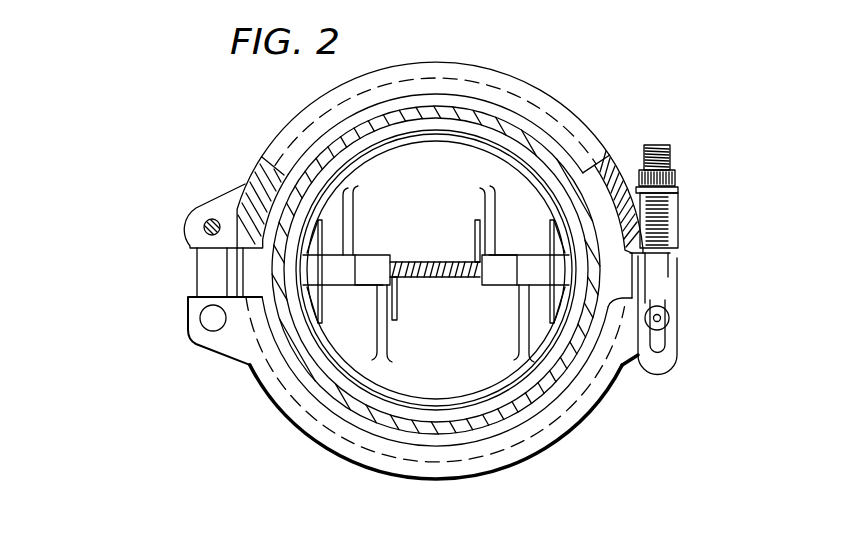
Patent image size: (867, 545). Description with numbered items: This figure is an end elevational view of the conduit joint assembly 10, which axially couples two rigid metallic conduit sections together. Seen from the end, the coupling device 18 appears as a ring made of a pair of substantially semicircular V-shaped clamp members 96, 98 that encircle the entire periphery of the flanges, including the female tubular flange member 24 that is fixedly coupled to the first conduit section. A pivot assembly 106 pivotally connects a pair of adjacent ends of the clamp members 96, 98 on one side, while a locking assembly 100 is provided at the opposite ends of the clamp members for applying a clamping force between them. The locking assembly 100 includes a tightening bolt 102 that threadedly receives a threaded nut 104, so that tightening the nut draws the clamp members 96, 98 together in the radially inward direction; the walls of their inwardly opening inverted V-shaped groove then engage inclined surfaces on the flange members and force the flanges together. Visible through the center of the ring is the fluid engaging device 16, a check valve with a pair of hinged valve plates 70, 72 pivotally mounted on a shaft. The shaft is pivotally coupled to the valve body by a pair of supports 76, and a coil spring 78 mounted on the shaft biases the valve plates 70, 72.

The conduit joint assembly 10 is at (432, 265).
The fluid engaging device 16 is at (383, 375).
The coupling device 18 is at (524, 78).
The female tubular flange member 24 is at (566, 152).
The valve plate 70 is at (447, 197).
The valve plate 72 is at (448, 388).
The support 76 is at (316, 252).
The coil spring 78 is at (398, 298).
The clamp member 96 is at (548, 152).
The clamp member 98 is at (588, 424).
The locking assembly 100 is at (686, 258).
The tightening bolt 102 is at (672, 228).
The threaded nut 104 is at (676, 180).
The pivot assembly 106 is at (192, 272).